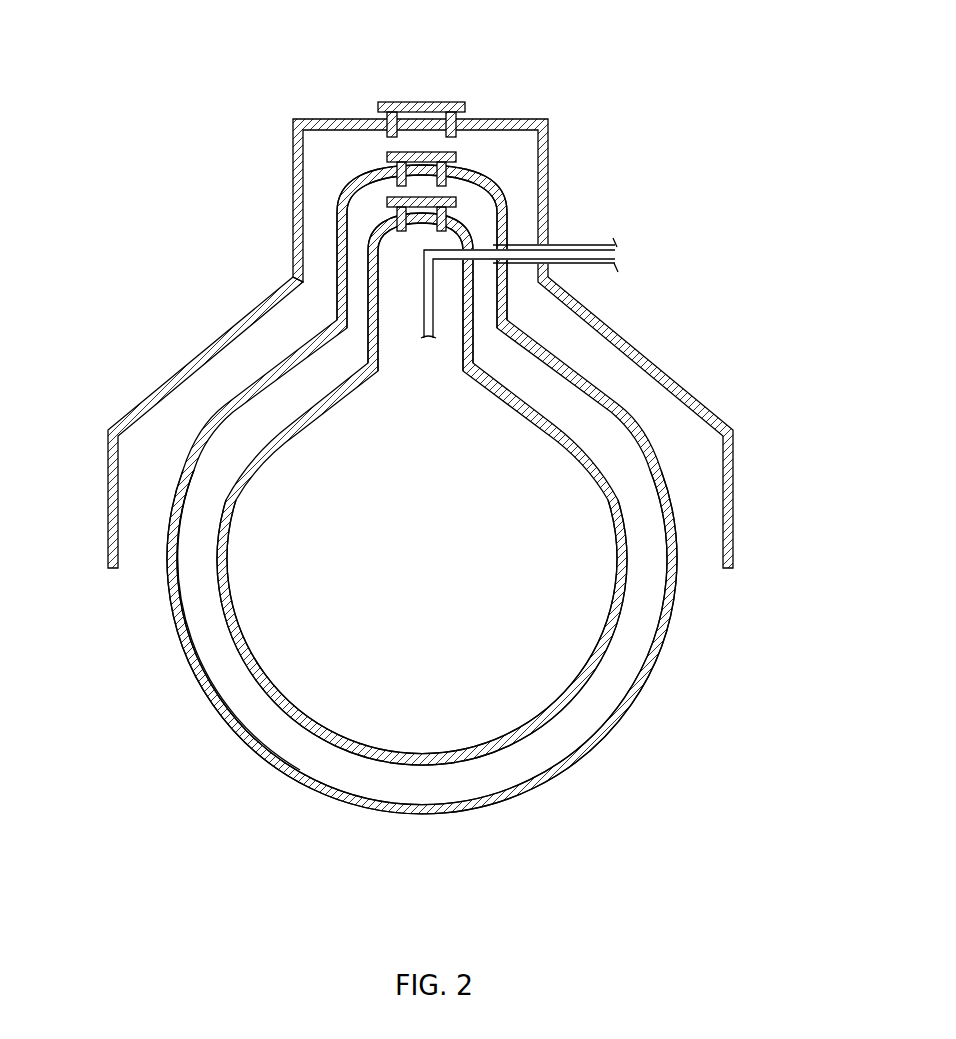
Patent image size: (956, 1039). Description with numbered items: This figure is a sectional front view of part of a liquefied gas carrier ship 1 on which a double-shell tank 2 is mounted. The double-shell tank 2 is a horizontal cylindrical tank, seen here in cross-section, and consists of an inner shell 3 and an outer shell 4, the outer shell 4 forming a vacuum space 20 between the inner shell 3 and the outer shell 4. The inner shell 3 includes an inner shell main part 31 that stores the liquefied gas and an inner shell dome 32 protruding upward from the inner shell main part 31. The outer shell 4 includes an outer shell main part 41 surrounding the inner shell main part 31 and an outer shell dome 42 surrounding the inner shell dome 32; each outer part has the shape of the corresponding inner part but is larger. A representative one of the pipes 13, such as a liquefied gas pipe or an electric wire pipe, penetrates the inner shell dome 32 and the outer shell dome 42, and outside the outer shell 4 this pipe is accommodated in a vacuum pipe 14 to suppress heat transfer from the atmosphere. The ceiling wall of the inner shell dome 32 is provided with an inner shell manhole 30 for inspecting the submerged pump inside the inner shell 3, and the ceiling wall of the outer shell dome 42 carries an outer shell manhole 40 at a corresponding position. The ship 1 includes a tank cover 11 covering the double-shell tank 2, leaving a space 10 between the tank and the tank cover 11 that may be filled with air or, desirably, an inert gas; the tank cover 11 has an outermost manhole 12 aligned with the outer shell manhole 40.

The liquefied gas carrier ship 1 is at (713, 303).
The double-shell tank 2 is at (800, 510).
The inner shell 3 is at (625, 592).
The outer shell 4 is at (676, 532).
The space 10 is at (172, 498).
The tank cover 11 is at (176, 372).
The outermost manhole 12 is at (430, 133).
The pipes 13 is at (437, 313).
The vacuum pipe 14 is at (575, 247).
The vacuum space 20 is at (218, 612).
The inner shell manhole 30 is at (422, 214).
The inner shell main part 31 is at (613, 493).
The inner shell dome 32 is at (373, 277).
The outer shell manhole 40 is at (415, 165).
The outer shell main part 41 is at (630, 415).
The outer shell dome 42 is at (341, 225).